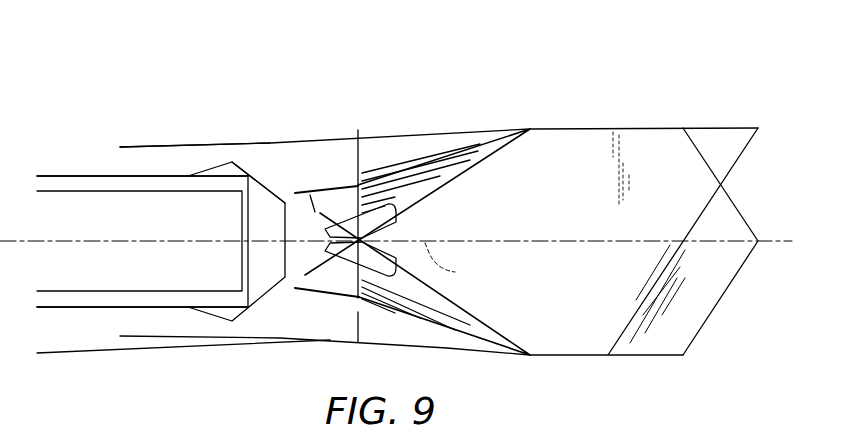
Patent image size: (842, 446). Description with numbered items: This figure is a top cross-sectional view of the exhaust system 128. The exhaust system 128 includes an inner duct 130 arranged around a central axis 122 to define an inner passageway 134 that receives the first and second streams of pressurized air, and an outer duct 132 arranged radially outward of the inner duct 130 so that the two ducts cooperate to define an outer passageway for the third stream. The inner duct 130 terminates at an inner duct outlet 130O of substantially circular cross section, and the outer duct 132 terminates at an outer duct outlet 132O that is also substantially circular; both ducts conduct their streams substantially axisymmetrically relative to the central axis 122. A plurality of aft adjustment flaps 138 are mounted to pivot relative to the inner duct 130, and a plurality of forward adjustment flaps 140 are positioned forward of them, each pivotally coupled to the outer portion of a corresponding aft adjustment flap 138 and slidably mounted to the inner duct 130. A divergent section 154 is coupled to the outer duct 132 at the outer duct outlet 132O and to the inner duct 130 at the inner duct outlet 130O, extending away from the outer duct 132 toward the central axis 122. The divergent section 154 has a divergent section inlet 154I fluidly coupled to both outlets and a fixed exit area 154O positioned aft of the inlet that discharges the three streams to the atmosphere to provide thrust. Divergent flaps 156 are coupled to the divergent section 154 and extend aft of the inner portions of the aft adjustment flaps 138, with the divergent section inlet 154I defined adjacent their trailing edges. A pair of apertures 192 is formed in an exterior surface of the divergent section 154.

The central axis 122 is at (462, 265).
The exhaust system 128 is at (468, 61).
The inner duct 130 is at (140, 189).
The inner duct outlet 130O is at (229, 266).
The outer duct 132 is at (129, 132).
The outer duct outlet 132O is at (257, 152).
The inner passageway 134 is at (106, 238).
The aft adjustment flaps 138 is at (272, 167).
The forward adjustment flaps 140 is at (214, 150).
The divergent section 154 is at (364, 119).
The divergent section inlet 154I is at (374, 196).
The fixed exit area 154O is at (738, 194).
The divergent flaps 156 is at (329, 211).
The apertures 192 is at (323, 233).